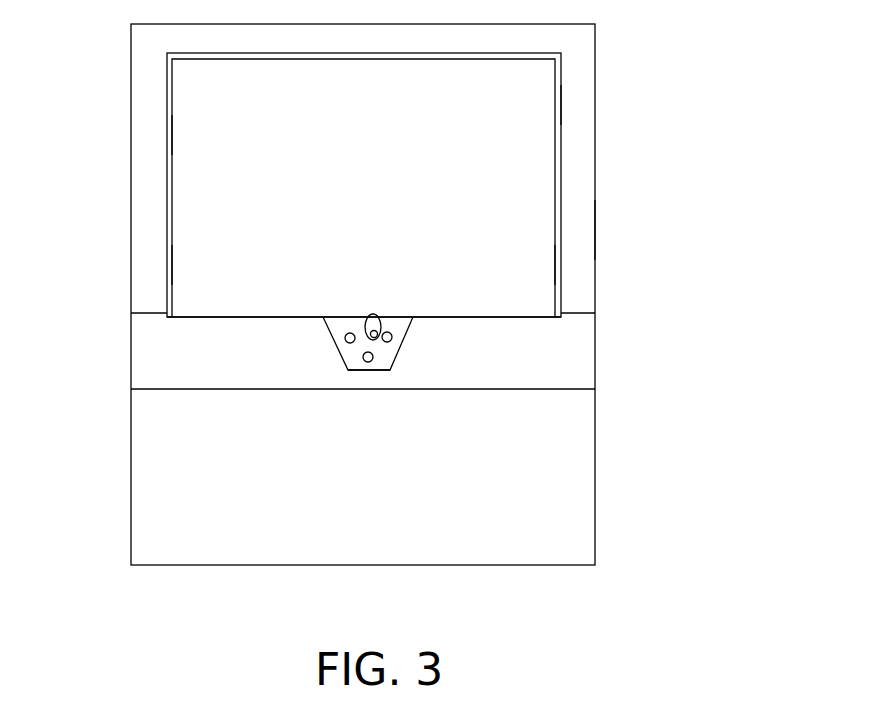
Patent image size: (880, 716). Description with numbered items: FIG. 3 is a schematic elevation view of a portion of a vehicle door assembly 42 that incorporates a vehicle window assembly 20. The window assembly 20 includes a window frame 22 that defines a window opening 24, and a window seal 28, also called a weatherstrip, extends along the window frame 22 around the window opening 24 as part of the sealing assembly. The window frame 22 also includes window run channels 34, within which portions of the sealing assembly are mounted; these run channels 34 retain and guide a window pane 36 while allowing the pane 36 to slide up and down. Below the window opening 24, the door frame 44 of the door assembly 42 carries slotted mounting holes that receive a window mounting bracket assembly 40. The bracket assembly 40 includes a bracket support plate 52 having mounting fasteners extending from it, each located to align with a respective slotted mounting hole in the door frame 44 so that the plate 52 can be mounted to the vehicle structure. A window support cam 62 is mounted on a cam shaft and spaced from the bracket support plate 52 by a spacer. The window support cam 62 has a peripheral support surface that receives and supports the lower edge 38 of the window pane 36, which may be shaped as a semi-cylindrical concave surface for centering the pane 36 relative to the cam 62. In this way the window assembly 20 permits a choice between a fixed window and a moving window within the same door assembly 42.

The vehicle window assembly 20 is at (158, 358).
The window frame 22 is at (131, 195).
The window opening 24 is at (382, 164).
The window seal 28 is at (175, 133).
The window run channels 34 is at (170, 265).
The window pane 36 is at (557, 105).
The lower edge 38 is at (515, 317).
The window mounting bracket assembly 40 is at (324, 362).
The vehicle door assembly 42 is at (630, 229).
The door frame 44 is at (596, 490).
The bracket support plate 52 is at (397, 359).
The window support cam 62 is at (372, 312).